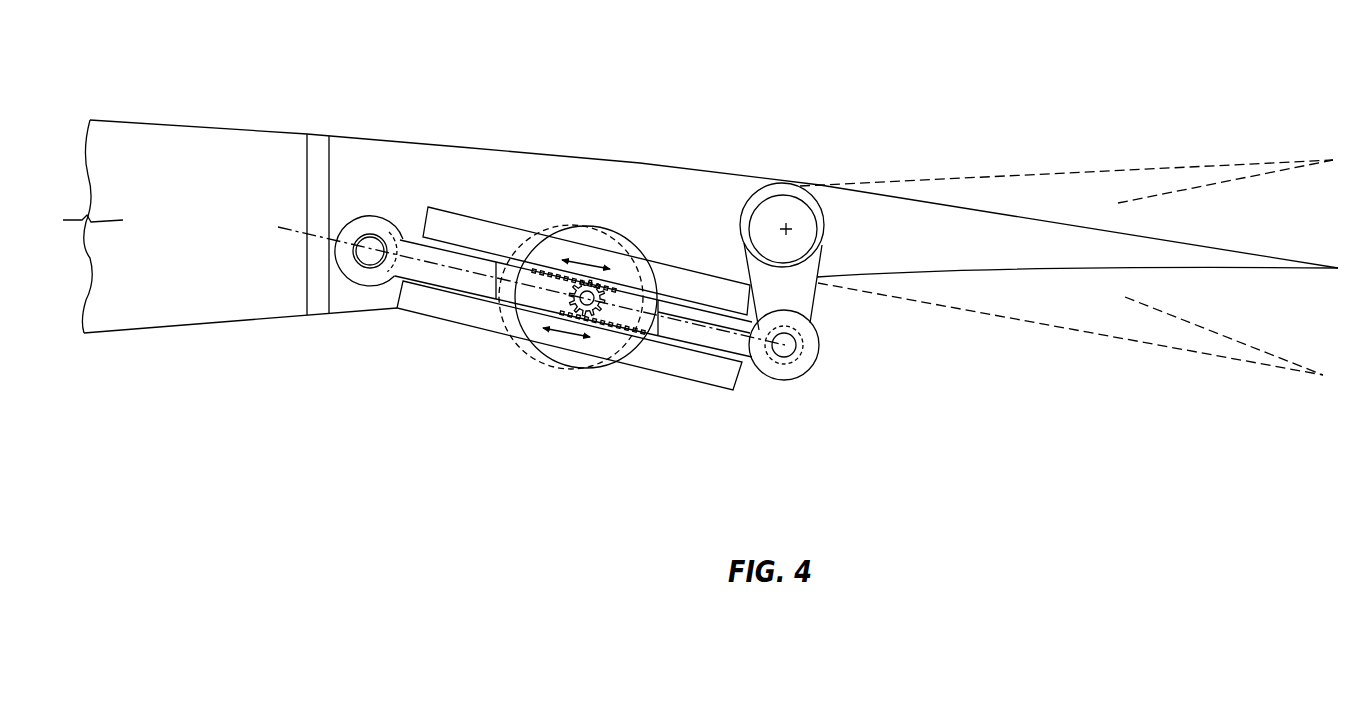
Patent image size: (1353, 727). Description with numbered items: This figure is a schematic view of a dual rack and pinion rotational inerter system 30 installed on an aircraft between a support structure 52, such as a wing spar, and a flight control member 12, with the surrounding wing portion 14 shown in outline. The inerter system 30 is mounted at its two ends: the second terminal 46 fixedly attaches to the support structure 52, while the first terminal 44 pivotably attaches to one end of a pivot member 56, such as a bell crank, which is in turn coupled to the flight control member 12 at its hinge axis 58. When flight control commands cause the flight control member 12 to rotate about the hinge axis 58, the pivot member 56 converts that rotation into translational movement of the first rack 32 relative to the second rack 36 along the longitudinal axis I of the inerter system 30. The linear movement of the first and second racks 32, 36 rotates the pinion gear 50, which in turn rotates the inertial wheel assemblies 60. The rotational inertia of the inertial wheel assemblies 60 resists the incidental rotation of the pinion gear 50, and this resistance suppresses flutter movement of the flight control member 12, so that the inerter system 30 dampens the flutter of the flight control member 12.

The flight control member 12 is at (1208, 243).
The wing 14 is at (255, 76).
The dual rack and pinion rotational inerter system 30 is at (790, 100).
The first rack 32 is at (507, 227).
The second rack 36 is at (645, 375).
The first terminal 44 is at (803, 377).
The second terminal 46 is at (370, 228).
The pinion gear 50 is at (603, 316).
The support structure 52 is at (317, 147).
The pivot member 56 is at (812, 298).
The hinge axis 58 is at (787, 228).
The inertial wheel assemblies 60 is at (521, 363).
The longitudinal axis I is at (282, 231).